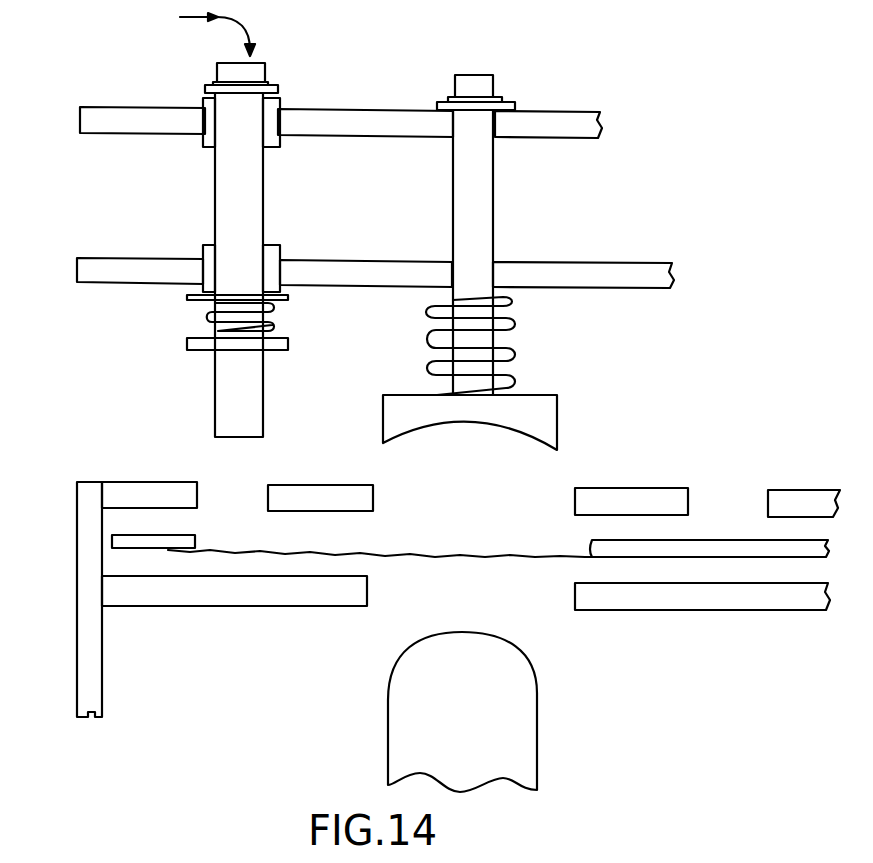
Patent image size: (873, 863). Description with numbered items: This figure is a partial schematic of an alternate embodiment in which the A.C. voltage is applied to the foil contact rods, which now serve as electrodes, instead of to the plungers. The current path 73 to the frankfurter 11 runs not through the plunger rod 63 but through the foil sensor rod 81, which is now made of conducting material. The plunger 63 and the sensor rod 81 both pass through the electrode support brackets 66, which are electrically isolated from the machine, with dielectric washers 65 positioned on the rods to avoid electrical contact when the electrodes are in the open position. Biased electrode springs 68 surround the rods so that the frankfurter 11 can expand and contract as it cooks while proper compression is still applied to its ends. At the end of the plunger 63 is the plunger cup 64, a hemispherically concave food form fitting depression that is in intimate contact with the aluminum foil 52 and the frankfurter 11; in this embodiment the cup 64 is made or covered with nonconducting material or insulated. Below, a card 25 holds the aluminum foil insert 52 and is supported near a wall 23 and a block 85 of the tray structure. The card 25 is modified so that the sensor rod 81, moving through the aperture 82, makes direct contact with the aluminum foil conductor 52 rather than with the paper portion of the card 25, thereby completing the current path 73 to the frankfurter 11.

The frankfurter 11 is at (525, 668).
The frame wall 23 is at (108, 518).
The card 25 is at (145, 548).
The aluminum foil insert 52 is at (427, 555).
The plunger 63 is at (493, 223).
The plunger cup 64 is at (477, 427).
The dielectric washer 65 is at (277, 85).
The electrode support bracket 66 is at (340, 107).
The biased electrode spring 68 is at (270, 328).
The current path 73 is at (227, 20).
The foil sensor rod 81 is at (265, 185).
The aperture 82 is at (218, 498).
The spacer block 85 is at (203, 143).